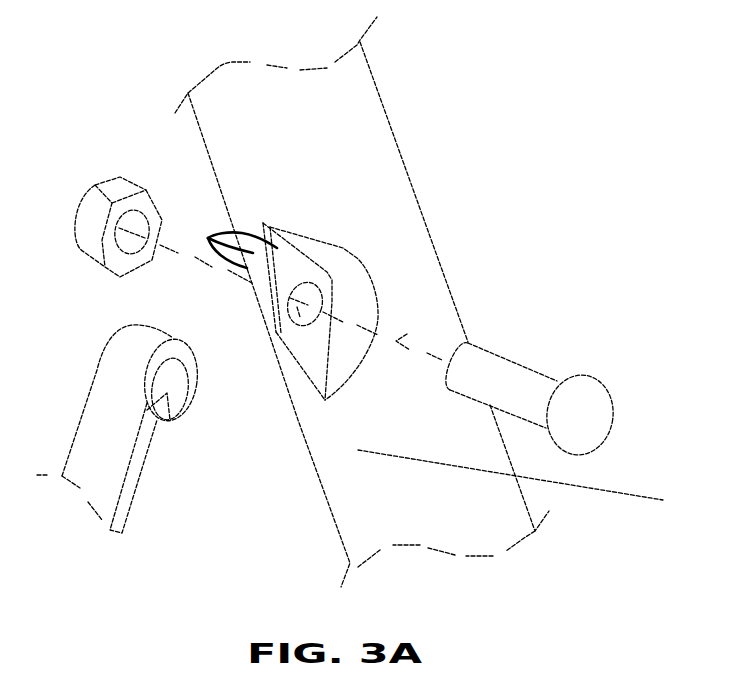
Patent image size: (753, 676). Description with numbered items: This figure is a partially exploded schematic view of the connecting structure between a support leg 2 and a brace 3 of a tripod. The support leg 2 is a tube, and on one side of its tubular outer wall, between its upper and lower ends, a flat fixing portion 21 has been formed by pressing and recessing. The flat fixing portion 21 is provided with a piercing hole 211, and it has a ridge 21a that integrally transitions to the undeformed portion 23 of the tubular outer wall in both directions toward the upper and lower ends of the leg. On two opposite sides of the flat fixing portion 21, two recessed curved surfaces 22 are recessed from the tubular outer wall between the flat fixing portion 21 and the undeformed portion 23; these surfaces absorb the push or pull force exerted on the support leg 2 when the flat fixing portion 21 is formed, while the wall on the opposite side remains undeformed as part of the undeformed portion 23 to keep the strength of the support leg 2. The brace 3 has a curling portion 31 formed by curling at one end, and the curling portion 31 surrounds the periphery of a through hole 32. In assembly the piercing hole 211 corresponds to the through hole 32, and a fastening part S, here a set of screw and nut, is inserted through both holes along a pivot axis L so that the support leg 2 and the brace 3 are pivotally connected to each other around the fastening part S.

The support leg 2 is at (397, 133).
The flat fixing portion 21 is at (208, 238).
The ridge 21a is at (268, 318).
The piercing hole 211 is at (297, 327).
The recessed curved surface 22 is at (238, 214).
The undeformed portion 23 is at (409, 273).
The brace 3 is at (132, 464).
The curling portion 31 is at (183, 417).
The through hole 32 is at (168, 378).
The pivot axis L is at (405, 334).
The fastening part S is at (586, 401).